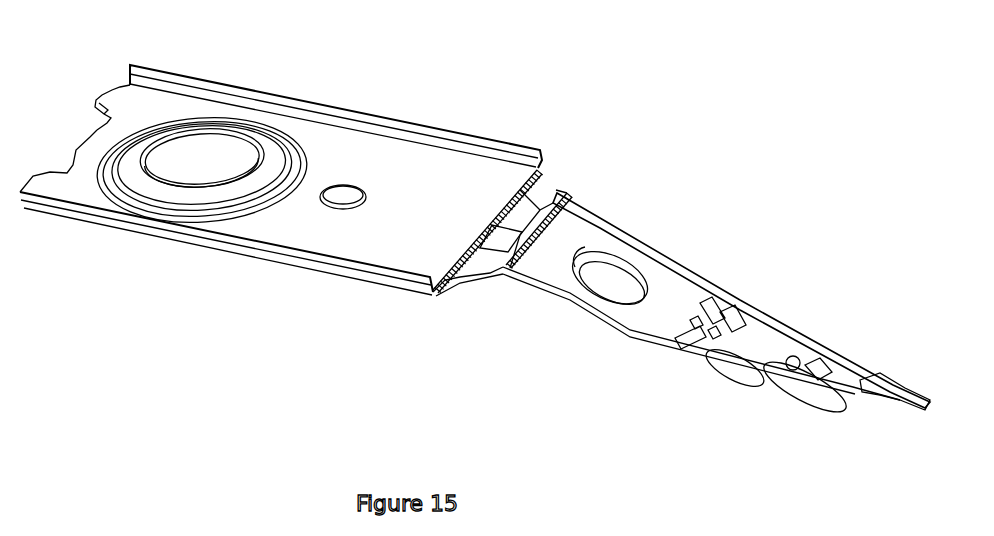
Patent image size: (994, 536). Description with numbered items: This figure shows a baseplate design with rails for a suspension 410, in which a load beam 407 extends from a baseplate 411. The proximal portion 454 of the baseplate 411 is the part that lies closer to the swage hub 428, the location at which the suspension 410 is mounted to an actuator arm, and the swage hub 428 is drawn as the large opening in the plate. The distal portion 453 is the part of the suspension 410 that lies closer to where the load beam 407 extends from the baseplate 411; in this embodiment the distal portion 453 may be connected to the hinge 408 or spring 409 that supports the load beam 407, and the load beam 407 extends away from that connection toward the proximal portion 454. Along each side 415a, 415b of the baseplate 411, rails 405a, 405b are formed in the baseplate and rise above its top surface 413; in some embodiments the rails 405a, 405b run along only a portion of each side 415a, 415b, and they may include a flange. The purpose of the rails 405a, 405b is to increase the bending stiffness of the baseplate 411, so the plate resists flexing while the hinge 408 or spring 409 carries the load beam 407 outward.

The proximal portion 454 is at (73, 143).
The baseplate 411 is at (115, 102).
The side 415a is at (245, 73).
The rail 405a is at (313, 97).
The side 415b is at (129, 243).
The rail 405b is at (275, 253).
The swage hub 428 is at (198, 195).
The top surface 413 is at (407, 152).
The distal portion 453 is at (490, 162).
The hinge 408 is at (541, 190).
The spring 409 is at (457, 296).
The load beam 407 is at (608, 210).
The suspension 410 is at (748, 233).